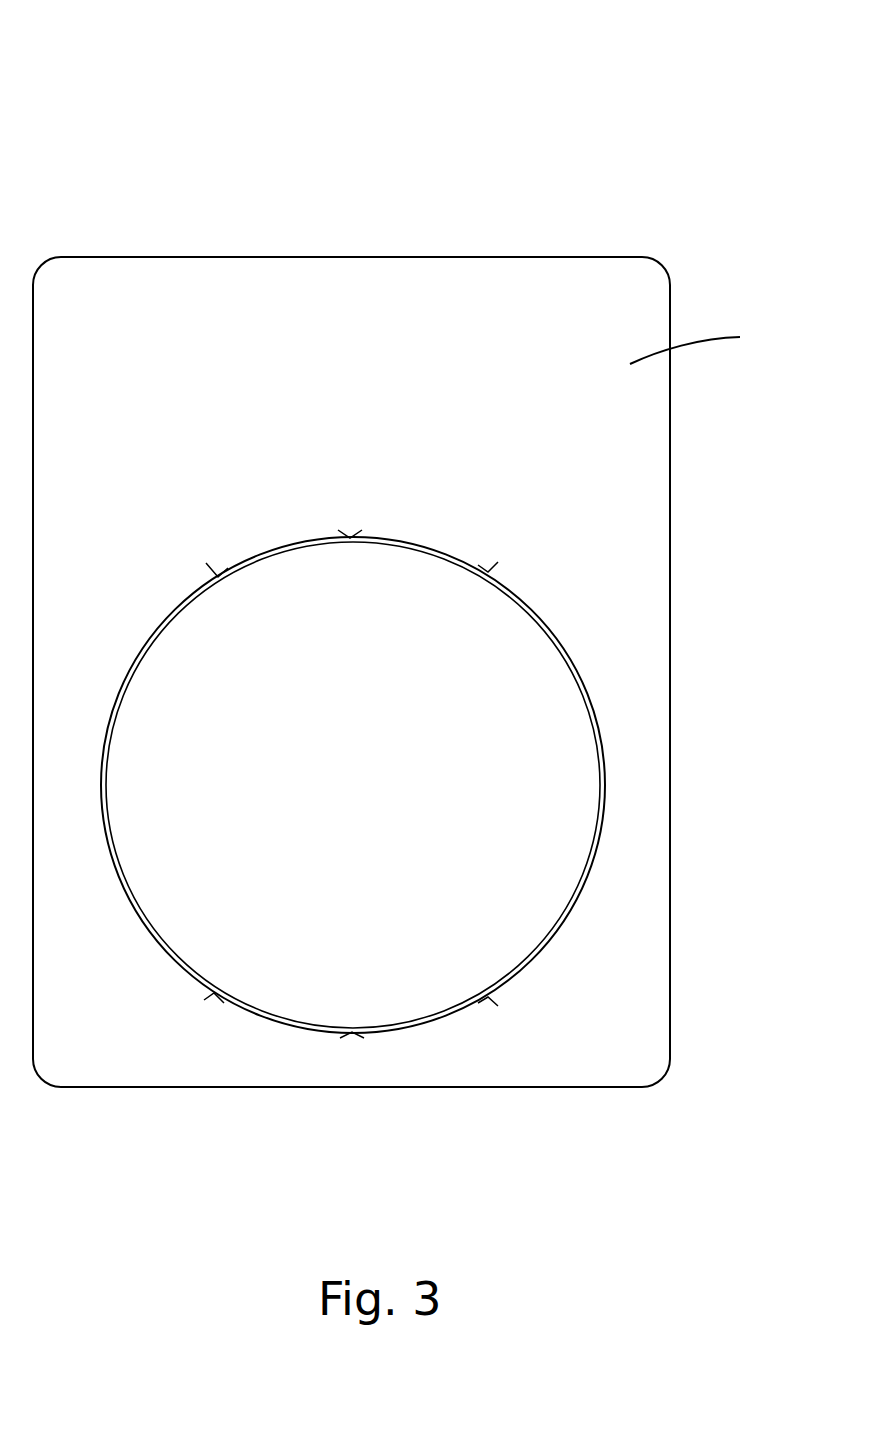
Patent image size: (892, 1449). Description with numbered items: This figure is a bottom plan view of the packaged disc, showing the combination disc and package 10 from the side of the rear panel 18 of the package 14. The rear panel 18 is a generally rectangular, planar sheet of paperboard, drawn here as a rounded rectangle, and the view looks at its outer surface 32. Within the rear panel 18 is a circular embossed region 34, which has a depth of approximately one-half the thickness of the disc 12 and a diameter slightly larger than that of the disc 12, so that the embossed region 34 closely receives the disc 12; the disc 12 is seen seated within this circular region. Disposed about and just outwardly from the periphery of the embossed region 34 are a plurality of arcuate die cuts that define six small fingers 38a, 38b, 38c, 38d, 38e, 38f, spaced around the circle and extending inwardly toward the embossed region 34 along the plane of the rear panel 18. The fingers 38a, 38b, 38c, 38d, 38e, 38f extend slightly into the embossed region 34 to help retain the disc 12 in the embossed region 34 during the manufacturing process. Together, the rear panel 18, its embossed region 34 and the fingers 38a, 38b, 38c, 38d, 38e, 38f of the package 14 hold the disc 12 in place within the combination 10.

The combination disc and package 10 is at (438, 192).
The disc 12 is at (520, 788).
The package 14 is at (204, 256).
The rear panel 18 is at (704, 344).
The outer surface 32 is at (170, 441).
The embossed region 34 is at (500, 893).
The finger 38a is at (218, 577).
The finger 38b is at (350, 535).
The finger 38c is at (488, 572).
The finger 38d is at (488, 997).
The finger 38e is at (352, 1036).
The finger 38f is at (214, 993).